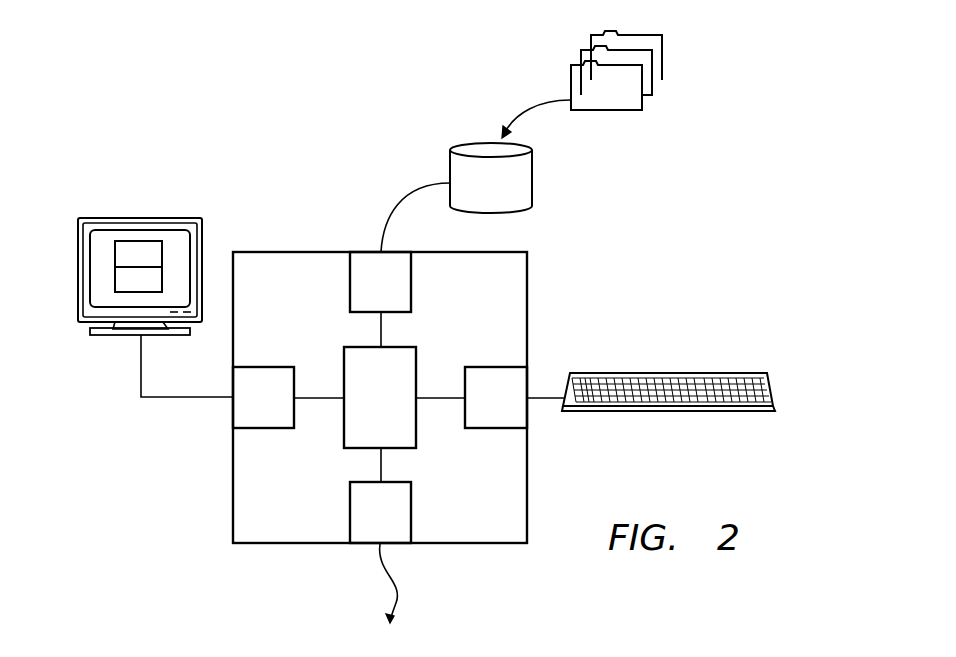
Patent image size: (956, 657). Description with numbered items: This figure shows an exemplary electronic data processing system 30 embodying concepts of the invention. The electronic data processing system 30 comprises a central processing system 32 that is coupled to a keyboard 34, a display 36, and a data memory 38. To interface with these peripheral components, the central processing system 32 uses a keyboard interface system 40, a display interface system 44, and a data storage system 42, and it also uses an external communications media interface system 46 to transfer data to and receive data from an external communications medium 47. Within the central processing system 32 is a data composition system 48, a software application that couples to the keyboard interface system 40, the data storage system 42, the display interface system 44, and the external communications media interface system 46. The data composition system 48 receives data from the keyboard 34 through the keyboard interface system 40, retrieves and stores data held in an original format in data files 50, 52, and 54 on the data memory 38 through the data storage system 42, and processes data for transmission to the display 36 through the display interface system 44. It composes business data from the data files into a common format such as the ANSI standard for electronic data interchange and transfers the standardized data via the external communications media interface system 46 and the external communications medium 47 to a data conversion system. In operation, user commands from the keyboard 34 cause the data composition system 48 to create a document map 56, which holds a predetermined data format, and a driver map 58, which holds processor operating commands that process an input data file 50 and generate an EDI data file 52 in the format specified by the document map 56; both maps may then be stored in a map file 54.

The electronic data processing system 30 is at (232, 72).
The central processing system 32 is at (311, 507).
The keyboard 34 is at (773, 390).
The display 36 is at (136, 284).
The data memory 38 is at (532, 180).
The keyboard interface system 40 is at (509, 412).
The data storage system 42 is at (394, 296).
The display interface system 44 is at (276, 412).
The external communications media interface system 46 is at (393, 527).
The external communications medium 47 is at (408, 597).
The data composition system 48 is at (393, 412).
The input data file 50 is at (643, 108).
The EDI data file 52 is at (653, 87).
The map file 54 is at (663, 58).
The document map 56 is at (115, 258).
The driver map 58 is at (115, 275).